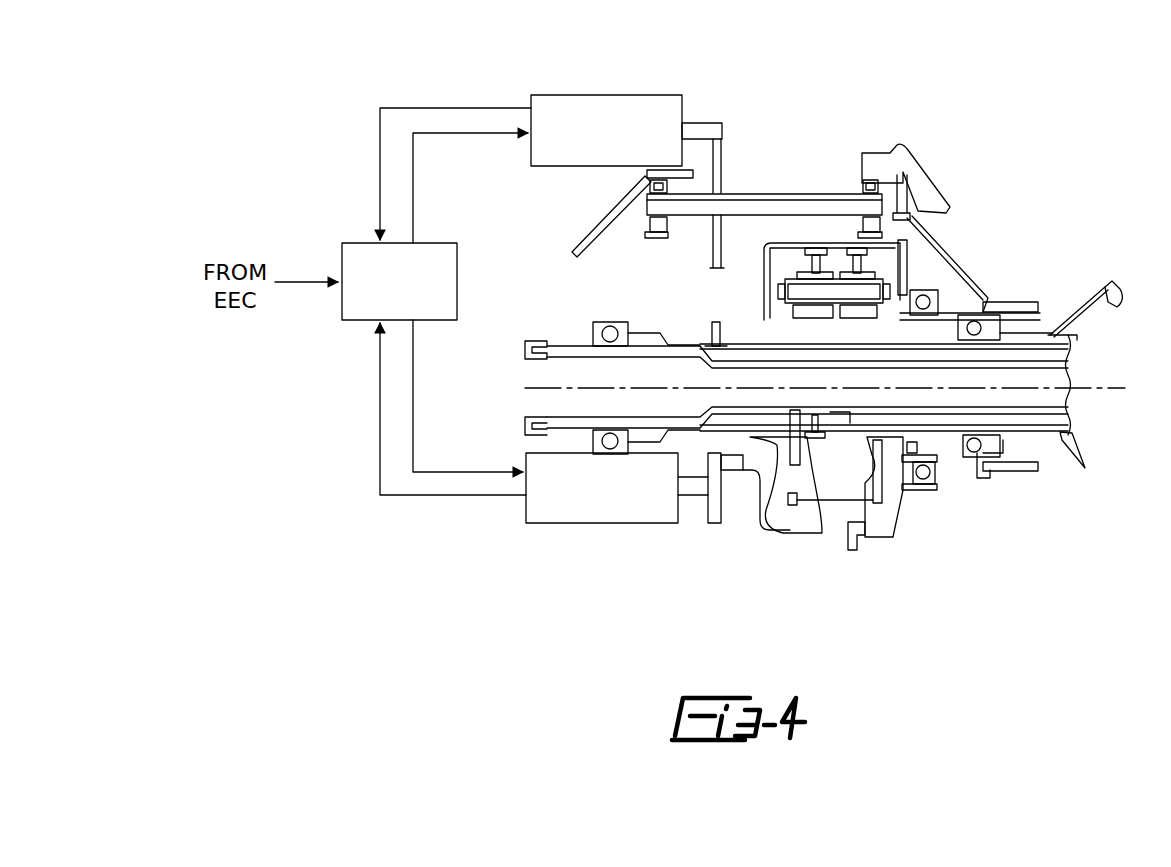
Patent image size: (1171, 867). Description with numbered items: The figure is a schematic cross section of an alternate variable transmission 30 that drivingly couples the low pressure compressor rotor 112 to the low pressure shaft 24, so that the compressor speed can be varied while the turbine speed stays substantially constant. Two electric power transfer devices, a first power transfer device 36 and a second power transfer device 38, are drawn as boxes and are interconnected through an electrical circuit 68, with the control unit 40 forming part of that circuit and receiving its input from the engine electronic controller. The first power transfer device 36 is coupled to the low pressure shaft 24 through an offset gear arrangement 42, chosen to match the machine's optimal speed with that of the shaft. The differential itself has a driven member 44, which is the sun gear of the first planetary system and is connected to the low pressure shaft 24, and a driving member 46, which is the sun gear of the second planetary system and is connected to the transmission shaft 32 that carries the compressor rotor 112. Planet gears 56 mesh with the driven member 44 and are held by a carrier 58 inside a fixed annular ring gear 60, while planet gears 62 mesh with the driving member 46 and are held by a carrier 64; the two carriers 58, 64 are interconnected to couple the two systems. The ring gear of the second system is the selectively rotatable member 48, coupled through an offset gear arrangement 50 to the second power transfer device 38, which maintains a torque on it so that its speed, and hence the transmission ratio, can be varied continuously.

The variable transmission 30 is at (745, 90).
The second power transfer device 38 is at (567, 103).
The offset gear arrangement 50 is at (836, 175).
The selectively rotatable member 48 is at (910, 262).
The low pressure compressor rotor 112 is at (1120, 288).
The planet gears 62 is at (805, 243).
The planet gears 56 is at (762, 262).
The annular ring gear 60 is at (762, 298).
The control unit 40 is at (357, 315).
The electrical circuit 68 is at (407, 497).
The first power transfer device 36 is at (548, 508).
The offset gear arrangement 42 is at (677, 438).
The carrier 58 is at (783, 440).
The driven member 44 is at (810, 438).
The carrier 64 is at (877, 440).
The driving member 46 is at (893, 498).
The transmission shaft 32 is at (983, 477).
The low pressure shaft 24 is at (1067, 430).